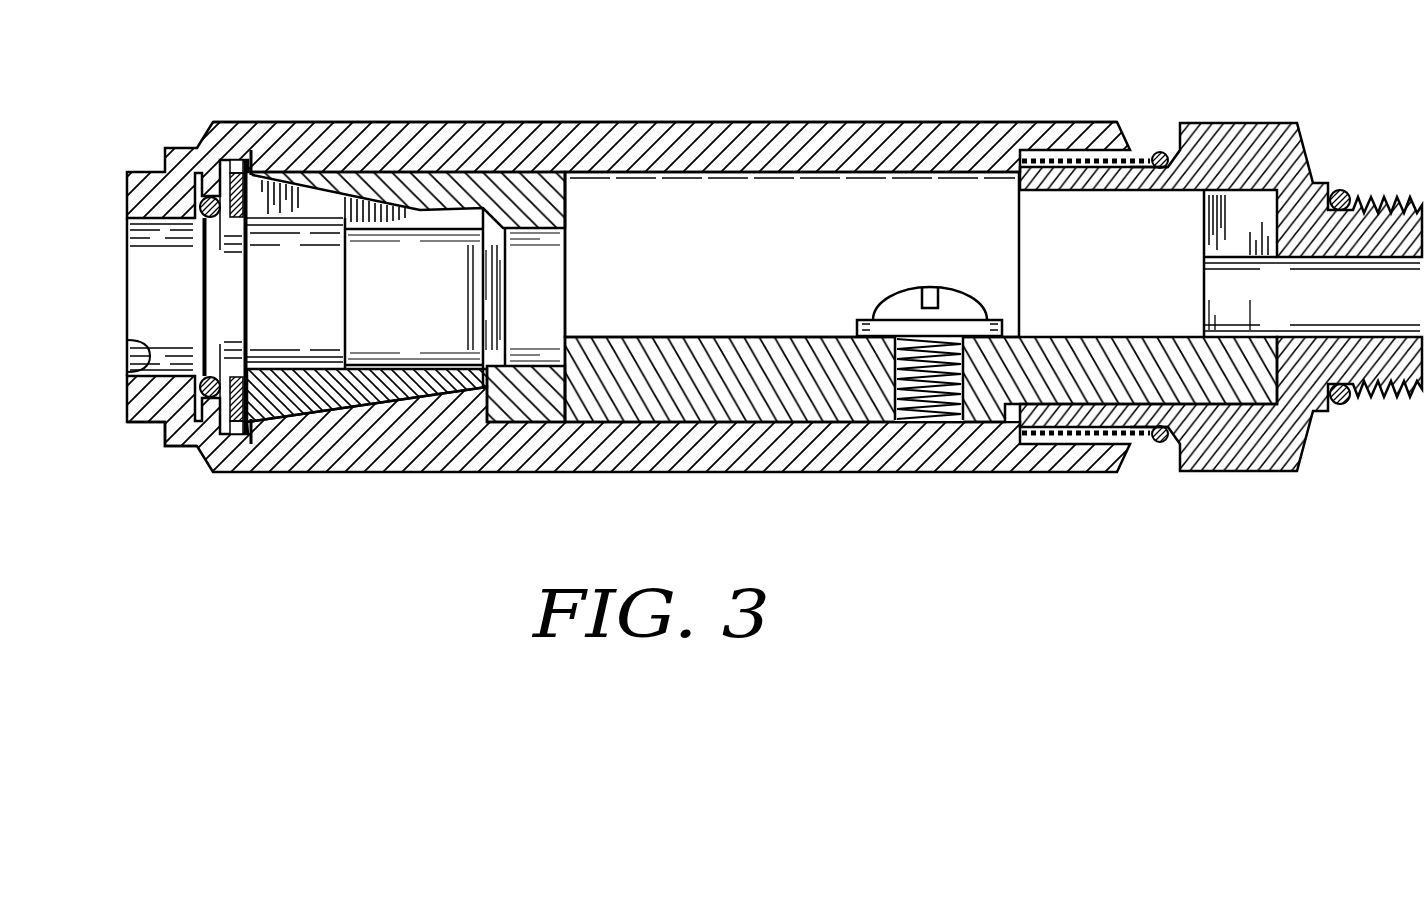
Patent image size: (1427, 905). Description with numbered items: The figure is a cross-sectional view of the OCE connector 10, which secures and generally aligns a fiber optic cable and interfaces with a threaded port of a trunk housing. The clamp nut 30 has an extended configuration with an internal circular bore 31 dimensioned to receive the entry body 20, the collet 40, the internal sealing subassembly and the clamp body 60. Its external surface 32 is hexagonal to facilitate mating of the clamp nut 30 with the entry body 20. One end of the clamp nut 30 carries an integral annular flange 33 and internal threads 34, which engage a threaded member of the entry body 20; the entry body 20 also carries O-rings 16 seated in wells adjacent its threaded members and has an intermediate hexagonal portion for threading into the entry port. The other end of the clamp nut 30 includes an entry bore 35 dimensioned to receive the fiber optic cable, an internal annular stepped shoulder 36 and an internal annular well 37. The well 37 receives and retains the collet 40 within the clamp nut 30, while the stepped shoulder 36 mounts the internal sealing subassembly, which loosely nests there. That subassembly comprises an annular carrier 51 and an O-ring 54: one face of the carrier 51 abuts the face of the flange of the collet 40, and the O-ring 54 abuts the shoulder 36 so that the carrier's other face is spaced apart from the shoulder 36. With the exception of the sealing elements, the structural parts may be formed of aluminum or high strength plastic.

The OCE connector 10 is at (857, 68).
The O-rings 16 is at (1160, 150).
The entry body 20 is at (1310, 140).
The clamp nut 30 is at (893, 473).
The internal circular bore 31 is at (710, 190).
The external surface 32 is at (563, 120).
The annular flange 33 is at (1144, 164).
The internal threads 34 is at (1063, 158).
The entry bore 35 is at (125, 341).
The internal annular stepped shoulder 36 is at (187, 450).
The internal annular well 37 is at (233, 437).
The internal collet 40 is at (300, 395).
The annular carrier 51 is at (243, 162).
The O-ring 54 is at (203, 195).
The clamp body 60 is at (740, 395).